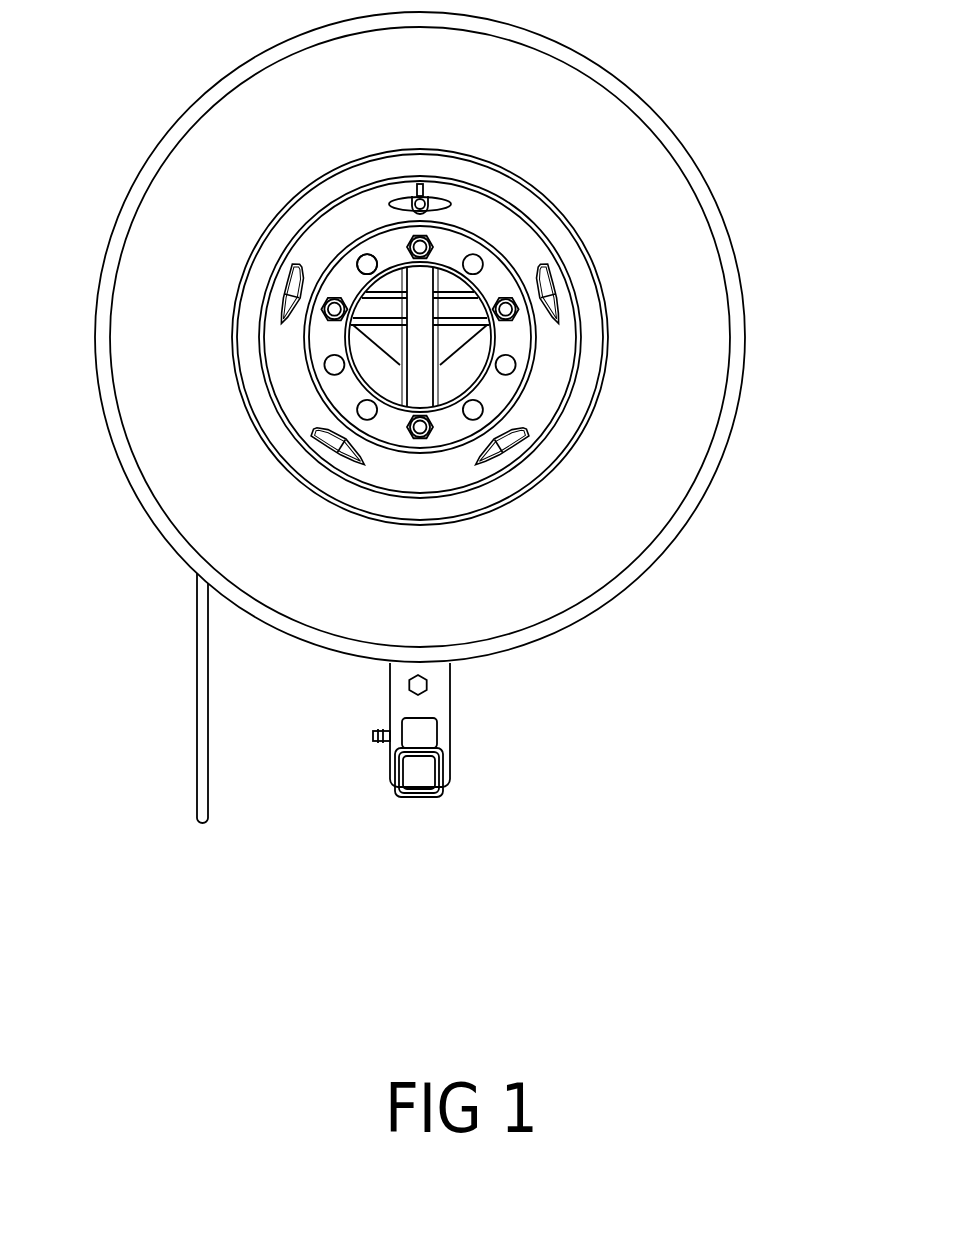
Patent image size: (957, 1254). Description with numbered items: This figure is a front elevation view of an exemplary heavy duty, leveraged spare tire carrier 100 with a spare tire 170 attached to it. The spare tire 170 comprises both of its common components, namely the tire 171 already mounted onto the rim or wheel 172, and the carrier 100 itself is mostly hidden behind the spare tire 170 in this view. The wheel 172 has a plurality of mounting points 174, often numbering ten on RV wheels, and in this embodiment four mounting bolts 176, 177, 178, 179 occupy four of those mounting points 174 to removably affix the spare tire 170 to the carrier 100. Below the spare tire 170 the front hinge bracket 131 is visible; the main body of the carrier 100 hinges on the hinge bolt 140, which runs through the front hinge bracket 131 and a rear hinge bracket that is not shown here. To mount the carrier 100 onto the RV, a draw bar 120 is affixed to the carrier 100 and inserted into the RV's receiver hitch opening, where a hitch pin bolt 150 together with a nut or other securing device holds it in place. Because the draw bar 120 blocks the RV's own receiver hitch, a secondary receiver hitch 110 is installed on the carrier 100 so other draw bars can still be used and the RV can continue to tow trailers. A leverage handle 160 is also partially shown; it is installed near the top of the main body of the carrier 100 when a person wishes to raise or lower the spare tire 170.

The heavy duty, leveraged spare tire carrier 100 is at (216, 987).
The secondary receiver hitch 110 is at (433, 790).
The draw bar 120 is at (436, 727).
The front hinge bracket 131 is at (441, 685).
The hinge bolt 140 is at (407, 681).
The hitch pin bolt 150 is at (373, 736).
The leverage handle 160 is at (197, 692).
The spare tire 170 is at (204, 56).
The tire 171 is at (600, 143).
The wheel 172 is at (492, 215).
The mounting points 174 is at (358, 256).
The mounting bolt 176 is at (510, 300).
The mounting bolt 177 is at (417, 240).
The mounting bolt 178 is at (323, 316).
The mounting bolt 179 is at (421, 438).